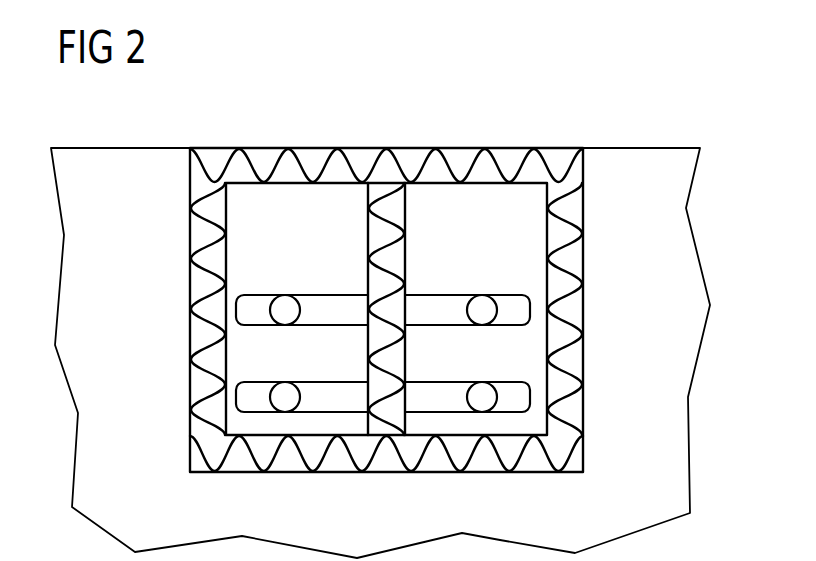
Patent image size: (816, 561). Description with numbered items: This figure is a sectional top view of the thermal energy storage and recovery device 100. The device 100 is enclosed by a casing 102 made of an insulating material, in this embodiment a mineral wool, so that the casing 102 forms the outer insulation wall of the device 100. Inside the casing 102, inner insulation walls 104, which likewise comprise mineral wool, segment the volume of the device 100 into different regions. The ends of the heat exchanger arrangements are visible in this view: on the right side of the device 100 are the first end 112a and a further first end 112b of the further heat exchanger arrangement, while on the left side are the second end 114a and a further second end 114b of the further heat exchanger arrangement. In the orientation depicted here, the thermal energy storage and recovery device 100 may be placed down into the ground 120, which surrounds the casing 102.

The thermal energy storage and recovery device 100 is at (620, 128).
The casing 102 is at (583, 212).
The inner insulation walls 104 is at (407, 207).
The first end 112a is at (480, 308).
The further first end 112b is at (483, 392).
The second end 114a is at (285, 307).
The further second end 114b is at (287, 392).
The ground 120 is at (158, 163).